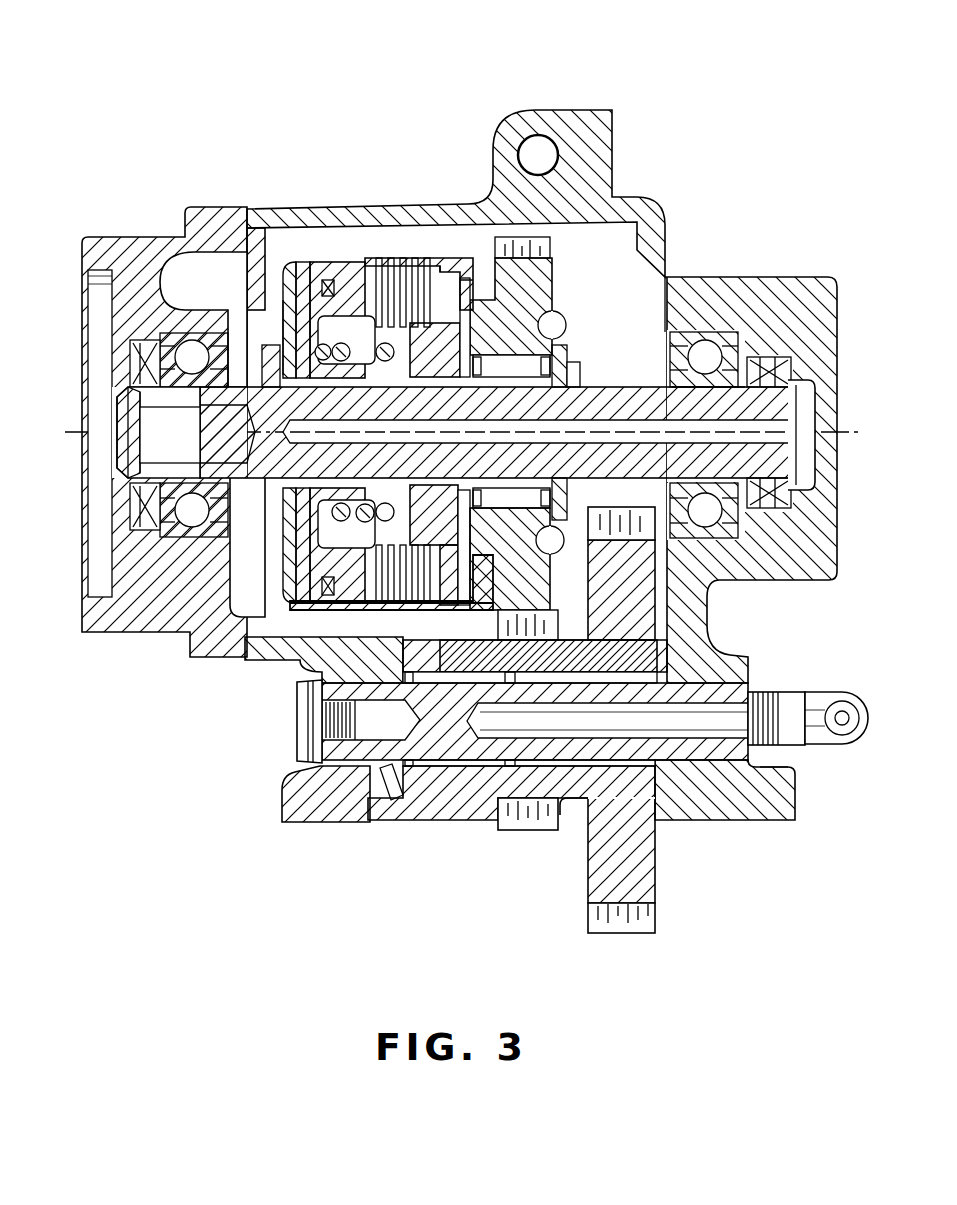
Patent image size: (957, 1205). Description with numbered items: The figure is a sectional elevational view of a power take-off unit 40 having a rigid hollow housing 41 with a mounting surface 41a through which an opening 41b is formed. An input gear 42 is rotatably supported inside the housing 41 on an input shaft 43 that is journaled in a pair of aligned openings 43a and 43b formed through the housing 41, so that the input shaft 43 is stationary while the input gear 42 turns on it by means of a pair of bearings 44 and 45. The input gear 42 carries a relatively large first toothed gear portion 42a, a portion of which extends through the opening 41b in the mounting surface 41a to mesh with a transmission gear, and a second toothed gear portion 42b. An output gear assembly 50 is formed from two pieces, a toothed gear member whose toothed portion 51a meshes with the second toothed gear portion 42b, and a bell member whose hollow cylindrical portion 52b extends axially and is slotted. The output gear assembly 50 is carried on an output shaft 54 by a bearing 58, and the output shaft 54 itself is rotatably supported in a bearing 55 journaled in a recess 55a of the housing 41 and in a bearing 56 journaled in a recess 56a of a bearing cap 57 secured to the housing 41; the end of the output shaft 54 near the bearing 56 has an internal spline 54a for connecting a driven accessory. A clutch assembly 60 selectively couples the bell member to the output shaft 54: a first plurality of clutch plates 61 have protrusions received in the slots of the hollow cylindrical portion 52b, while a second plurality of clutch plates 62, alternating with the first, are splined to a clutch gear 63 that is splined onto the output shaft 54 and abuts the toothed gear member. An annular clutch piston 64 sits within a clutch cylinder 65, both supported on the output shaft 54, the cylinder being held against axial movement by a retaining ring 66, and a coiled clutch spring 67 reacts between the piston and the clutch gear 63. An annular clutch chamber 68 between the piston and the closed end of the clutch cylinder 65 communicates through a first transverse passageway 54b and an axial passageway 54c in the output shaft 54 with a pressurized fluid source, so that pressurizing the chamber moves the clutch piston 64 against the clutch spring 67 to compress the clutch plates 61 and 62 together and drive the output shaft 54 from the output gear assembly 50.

The power take-off unit 40 is at (722, 145).
The housing 41 is at (570, 122).
The mounting surface 41a is at (767, 823).
The opening 41b is at (367, 820).
The input gear 42 is at (572, 880).
The first toothed gear portion 42a is at (645, 925).
The second toothed gear portion 42b is at (513, 823).
The input shaft 43 is at (445, 753).
The opening 43a is at (325, 698).
The opening 43b is at (748, 687).
The bearing 44 is at (422, 765).
The bearing 45 is at (633, 765).
The output gear assembly 50 is at (565, 285).
The toothed portion 51a is at (520, 240).
The hollow cylindrical portion 52b is at (462, 262).
The output shaft 54 is at (787, 400).
The internal spline 54a is at (157, 403).
The first transverse passageway 54b is at (258, 540).
The axial passageway 54c is at (778, 440).
The bearing 55 is at (727, 337).
The recess 55a is at (700, 337).
The bearing 56 is at (200, 340).
The recess 56a is at (162, 335).
The bearing cap 57 is at (223, 225).
The bearing 58 is at (567, 368).
The clutch assembly 60 is at (377, 256).
The first plurality of clutch plates 61 is at (426, 258).
The second plurality of clutch plates 62 is at (412, 612).
The clutch gear 63 is at (452, 335).
The clutch piston 64 is at (355, 290).
The clutch cylinder 65 is at (290, 273).
The retaining ring 66 is at (262, 368).
The clutch spring 67 is at (340, 343).
The annular clutch chamber 68 is at (288, 325).